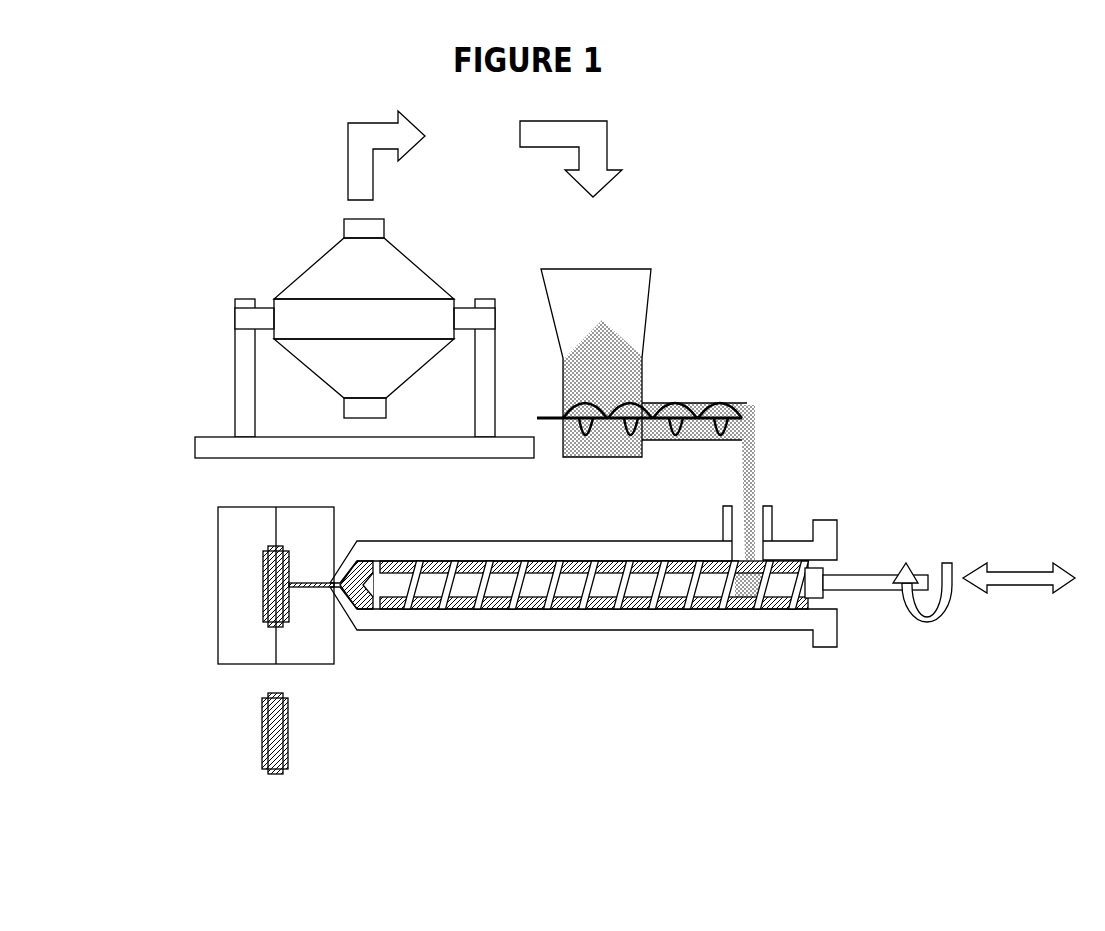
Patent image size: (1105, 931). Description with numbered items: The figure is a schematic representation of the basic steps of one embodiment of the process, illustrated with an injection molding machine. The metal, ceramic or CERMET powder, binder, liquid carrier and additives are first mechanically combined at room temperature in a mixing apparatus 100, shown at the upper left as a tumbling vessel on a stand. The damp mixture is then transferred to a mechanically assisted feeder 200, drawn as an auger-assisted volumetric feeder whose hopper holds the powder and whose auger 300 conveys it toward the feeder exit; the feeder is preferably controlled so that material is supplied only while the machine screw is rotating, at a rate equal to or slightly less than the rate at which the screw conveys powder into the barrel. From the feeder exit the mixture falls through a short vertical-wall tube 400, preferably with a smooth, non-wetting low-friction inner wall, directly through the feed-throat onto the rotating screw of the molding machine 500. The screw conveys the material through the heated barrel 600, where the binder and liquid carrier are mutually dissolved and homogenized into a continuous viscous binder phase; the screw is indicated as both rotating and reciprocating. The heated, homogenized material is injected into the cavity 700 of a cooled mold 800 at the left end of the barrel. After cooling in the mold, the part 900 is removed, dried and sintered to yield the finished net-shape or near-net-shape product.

The mixing apparatus 100 is at (326, 270).
The mechanically assisted feeder 200 is at (622, 298).
The screw feeder 300 is at (613, 367).
The vertical-wall tube 400 is at (768, 505).
The screw of the molding machine 500 is at (865, 572).
The heated barrel 600 is at (493, 622).
The cavity 700 is at (265, 572).
The cooled mold 800 is at (218, 623).
The part 900 is at (262, 734).